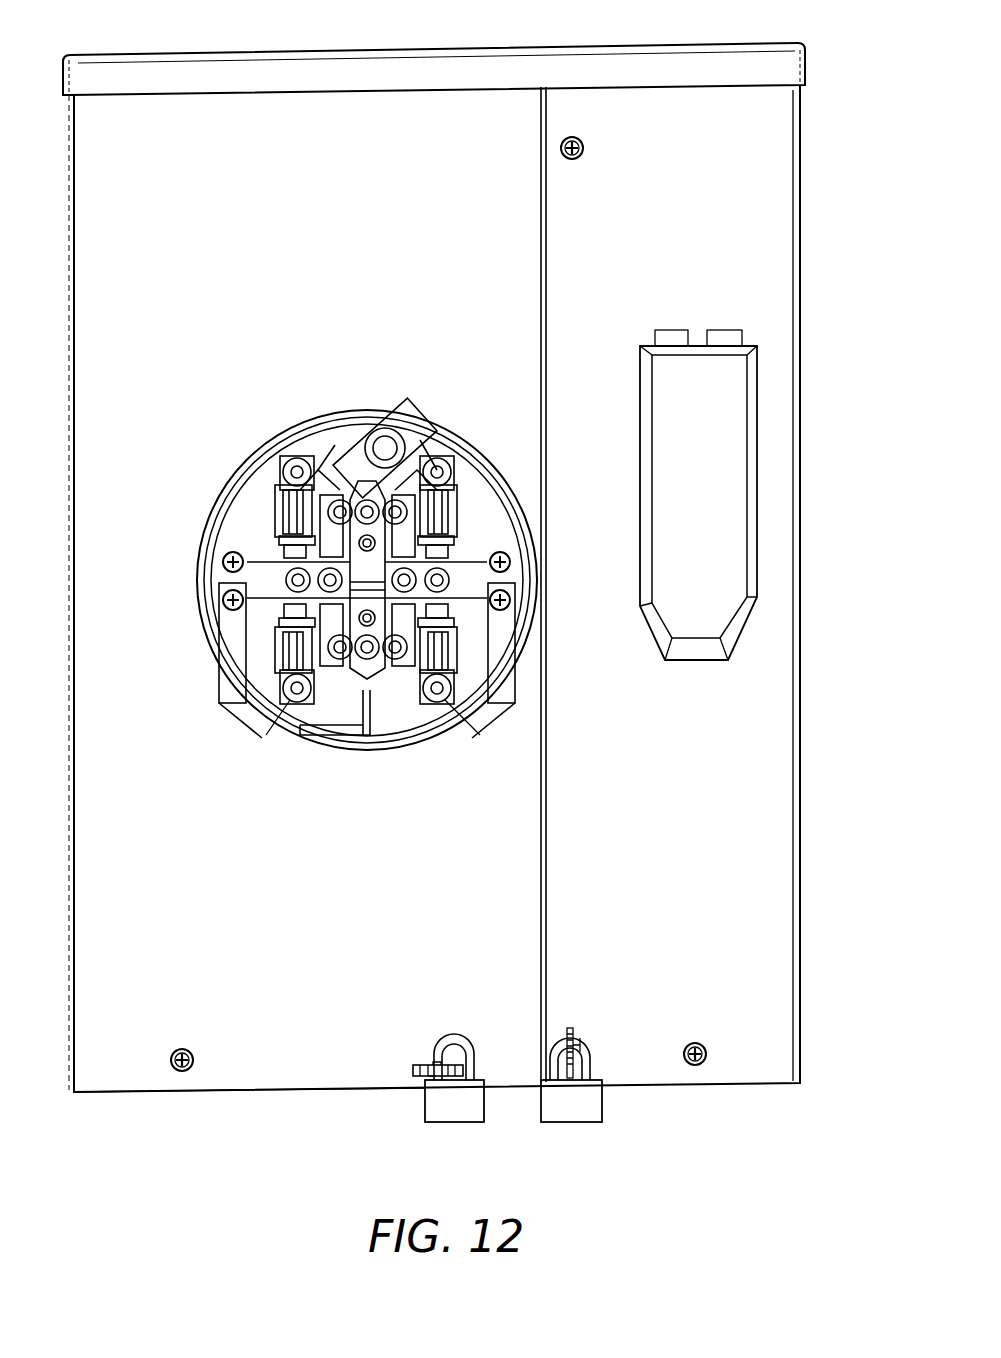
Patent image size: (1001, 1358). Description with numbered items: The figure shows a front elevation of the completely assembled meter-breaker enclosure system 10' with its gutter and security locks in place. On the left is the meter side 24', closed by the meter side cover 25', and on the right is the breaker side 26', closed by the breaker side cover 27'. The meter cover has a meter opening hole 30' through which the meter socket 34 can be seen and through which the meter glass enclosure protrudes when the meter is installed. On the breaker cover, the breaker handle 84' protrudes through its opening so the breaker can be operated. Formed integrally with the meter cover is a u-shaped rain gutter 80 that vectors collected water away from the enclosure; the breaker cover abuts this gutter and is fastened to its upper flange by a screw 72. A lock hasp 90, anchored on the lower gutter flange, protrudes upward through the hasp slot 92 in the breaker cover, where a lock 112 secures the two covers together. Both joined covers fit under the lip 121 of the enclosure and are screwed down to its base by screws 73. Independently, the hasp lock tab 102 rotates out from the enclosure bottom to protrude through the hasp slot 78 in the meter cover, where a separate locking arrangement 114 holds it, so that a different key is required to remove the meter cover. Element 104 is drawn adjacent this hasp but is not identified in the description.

The meter-breaker enclosure system 10' is at (466, 588).
The meter side 24' is at (292, 20).
The breaker side 26' is at (673, 20).
The meter side cover 25' is at (249, 1111).
The breaker side cover 27' is at (812, 891).
The meter opening hole 30' is at (367, 568).
The meter socket 34 is at (373, 488).
The screw 72 is at (583, 143).
The screws 73 is at (172, 1054).
The meter side cover lock hasp slot 78 is at (413, 1072).
The u-shaped rain gutter 80 is at (541, 1003).
The breaker handle 84' is at (754, 495).
The meter cover to breaker cover lock hasp 90 is at (580, 1040).
The meter cover to breaker cover lock hasp slot 92 is at (575, 1033).
The hasp lock tab 102 is at (430, 1070).
The slot 104 is at (432, 1063).
The lock 112 is at (572, 1124).
The locking arrangement 114 is at (450, 1124).
The lip 121 is at (742, 87).